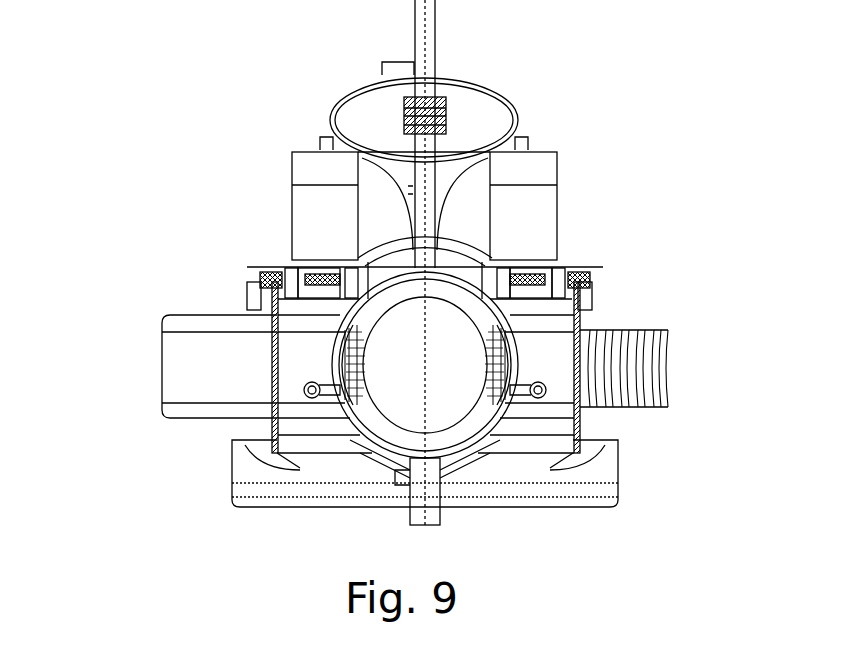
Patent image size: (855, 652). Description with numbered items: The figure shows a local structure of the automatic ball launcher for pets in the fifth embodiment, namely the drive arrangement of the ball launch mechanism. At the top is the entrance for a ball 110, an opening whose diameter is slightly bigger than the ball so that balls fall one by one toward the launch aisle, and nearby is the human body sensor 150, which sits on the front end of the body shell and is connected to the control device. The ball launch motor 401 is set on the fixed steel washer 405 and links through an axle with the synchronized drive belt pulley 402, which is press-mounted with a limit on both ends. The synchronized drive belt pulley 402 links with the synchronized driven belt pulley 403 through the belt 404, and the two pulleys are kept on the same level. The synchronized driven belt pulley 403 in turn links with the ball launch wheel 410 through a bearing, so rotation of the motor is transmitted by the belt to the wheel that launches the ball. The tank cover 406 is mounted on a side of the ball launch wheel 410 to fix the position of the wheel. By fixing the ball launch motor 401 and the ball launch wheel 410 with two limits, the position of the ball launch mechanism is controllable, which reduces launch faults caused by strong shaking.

The entrance for a ball 110 is at (487, 85).
The human body sensor 150 is at (446, 122).
The ball launch motor 401 is at (557, 215).
The synchronized drive belt pulley 402 is at (578, 275).
The synchronized driven belt pulley 403 is at (496, 280).
The belt 404 is at (592, 289).
The fixed steel washer 405 is at (250, 267).
The tank cover 406 is at (162, 363).
The ball launch wheel 410 is at (668, 360).